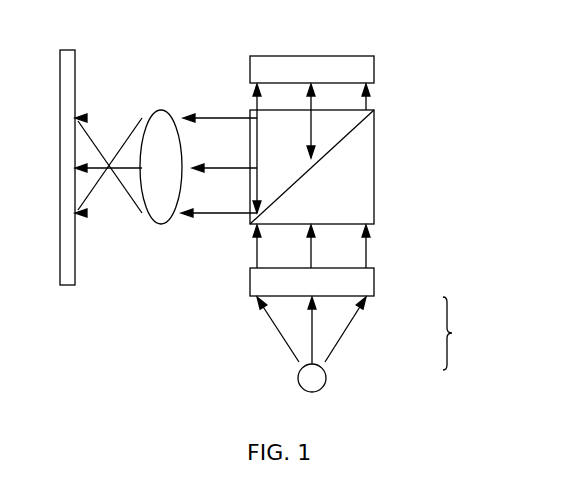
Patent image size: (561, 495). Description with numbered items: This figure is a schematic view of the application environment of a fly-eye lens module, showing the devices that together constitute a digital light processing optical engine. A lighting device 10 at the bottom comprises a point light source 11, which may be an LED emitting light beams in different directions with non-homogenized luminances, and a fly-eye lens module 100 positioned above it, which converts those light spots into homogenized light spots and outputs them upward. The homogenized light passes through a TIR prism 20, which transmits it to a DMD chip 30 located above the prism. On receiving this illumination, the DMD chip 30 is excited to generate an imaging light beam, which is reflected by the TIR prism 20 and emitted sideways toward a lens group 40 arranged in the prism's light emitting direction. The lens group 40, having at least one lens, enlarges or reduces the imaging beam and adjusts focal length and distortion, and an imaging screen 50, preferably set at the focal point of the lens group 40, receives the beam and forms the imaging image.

The lighting device 10 is at (463, 333).
The point light source 11 is at (312, 378).
The fly-eye lens module 100 is at (352, 284).
The total internal reflection (TIR) prism 20 is at (355, 195).
The digital micromirror device (DMD) chip 30 is at (355, 70).
The lens group 40 is at (157, 125).
The imaging screen 50 is at (63, 280).